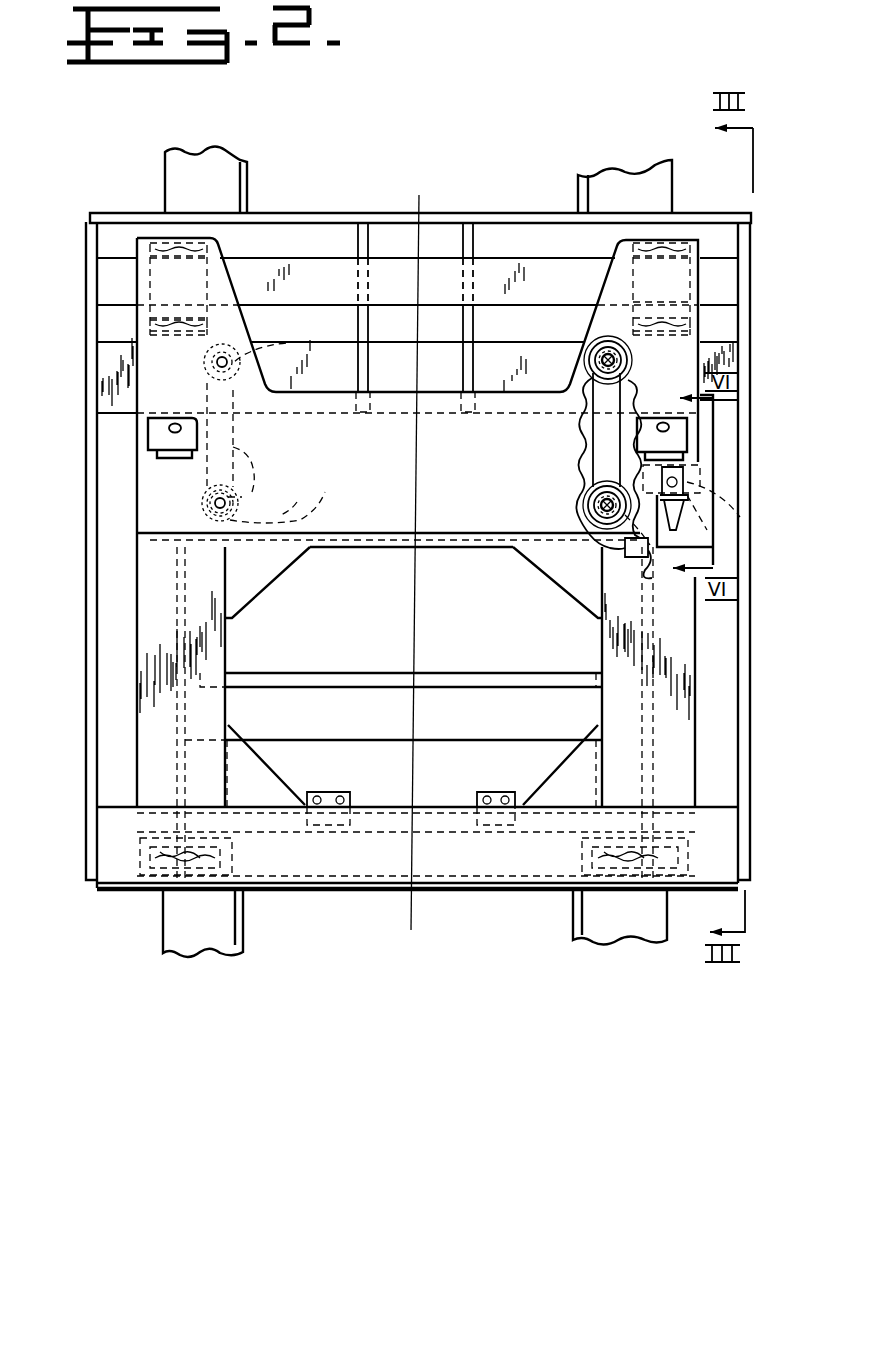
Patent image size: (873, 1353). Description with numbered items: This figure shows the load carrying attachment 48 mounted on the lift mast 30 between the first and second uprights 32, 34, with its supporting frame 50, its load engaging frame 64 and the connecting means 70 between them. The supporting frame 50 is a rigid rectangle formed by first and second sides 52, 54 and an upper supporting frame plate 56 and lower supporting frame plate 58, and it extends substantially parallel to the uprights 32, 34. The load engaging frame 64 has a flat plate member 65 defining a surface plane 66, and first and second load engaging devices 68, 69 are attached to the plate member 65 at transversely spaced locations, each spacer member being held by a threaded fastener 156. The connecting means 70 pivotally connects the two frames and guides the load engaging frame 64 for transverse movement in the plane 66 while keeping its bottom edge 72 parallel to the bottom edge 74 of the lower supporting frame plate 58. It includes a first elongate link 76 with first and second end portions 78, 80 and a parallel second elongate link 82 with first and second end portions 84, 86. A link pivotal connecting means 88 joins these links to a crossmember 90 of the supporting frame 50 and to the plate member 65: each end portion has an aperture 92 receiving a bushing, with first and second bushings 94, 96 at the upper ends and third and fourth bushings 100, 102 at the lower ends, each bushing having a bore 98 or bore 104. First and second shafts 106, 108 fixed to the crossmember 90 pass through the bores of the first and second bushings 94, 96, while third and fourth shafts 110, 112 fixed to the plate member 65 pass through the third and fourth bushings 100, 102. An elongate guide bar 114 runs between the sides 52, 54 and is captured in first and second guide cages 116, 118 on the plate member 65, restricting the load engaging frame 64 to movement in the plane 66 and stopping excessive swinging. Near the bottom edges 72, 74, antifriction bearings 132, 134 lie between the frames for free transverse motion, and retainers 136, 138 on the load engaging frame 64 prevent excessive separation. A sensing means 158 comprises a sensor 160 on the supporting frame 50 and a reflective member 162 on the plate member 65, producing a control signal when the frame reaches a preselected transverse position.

The lift mast 30 is at (397, 90).
The first upright 32 is at (248, 180).
The second upright 34 is at (600, 174).
The load carrying attachment 48 is at (345, 905).
The supporting frame 50 is at (436, 211).
The first side 52 is at (87, 594).
The second side 54 is at (752, 655).
The upper supporting frame plate 56 is at (387, 215).
The lower supporting frame plate 58 is at (103, 850).
The load engaging frame 64 is at (697, 722).
The plate member 65 is at (430, 535).
The surface plane 66 is at (137, 480).
The first load engaging device 68 is at (200, 434).
The second load engaging device 69 is at (692, 438).
The connecting means 70 is at (333, 468).
The bottom edge of load engaging frame 72 is at (503, 886).
The bottom edge of lower supporting frame plate 74 is at (453, 893).
The first elongate link 76 is at (247, 468).
The first end portion of first link 78 is at (235, 360).
The second end portion of first link 80 is at (297, 502).
The second elongate link 82 is at (597, 450).
The first end portion of second link 84 is at (590, 362).
The second end portion of second link 86 is at (578, 504).
The link pivotal connecting means 88 is at (626, 352).
The crossmember 90 is at (108, 355).
The aperture 92 is at (244, 347).
The first bushing 94 is at (286, 343).
The second bushing 96 is at (634, 358).
The bore 98 is at (204, 372).
The third bushing 100 is at (300, 520).
The fourth bushing 102 is at (588, 492).
The bore 104 is at (237, 503).
The first shaft 106 is at (230, 370).
The second shaft 108 is at (600, 353).
The third shaft 110 is at (214, 502).
The fourth shaft 112 is at (605, 520).
The guide bar 114 is at (108, 280).
The first guide cage 116 is at (207, 278).
The second guide cage 118 is at (636, 283).
The antifriction bearing 132 is at (142, 881).
The antifriction bearing 134 is at (694, 854).
The retainer 136 is at (327, 792).
The retainer 138 is at (492, 792).
The threaded fastener 156 is at (172, 428).
The sensing means 158 is at (720, 477).
The sensor 160 is at (693, 485).
The reflective member 162 is at (693, 510).